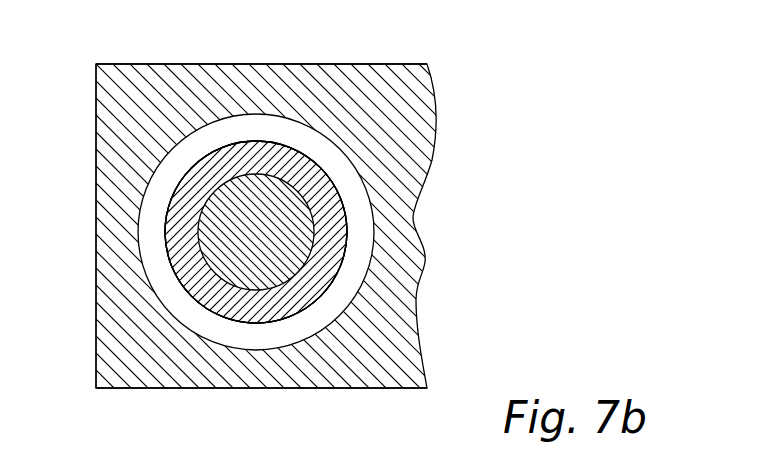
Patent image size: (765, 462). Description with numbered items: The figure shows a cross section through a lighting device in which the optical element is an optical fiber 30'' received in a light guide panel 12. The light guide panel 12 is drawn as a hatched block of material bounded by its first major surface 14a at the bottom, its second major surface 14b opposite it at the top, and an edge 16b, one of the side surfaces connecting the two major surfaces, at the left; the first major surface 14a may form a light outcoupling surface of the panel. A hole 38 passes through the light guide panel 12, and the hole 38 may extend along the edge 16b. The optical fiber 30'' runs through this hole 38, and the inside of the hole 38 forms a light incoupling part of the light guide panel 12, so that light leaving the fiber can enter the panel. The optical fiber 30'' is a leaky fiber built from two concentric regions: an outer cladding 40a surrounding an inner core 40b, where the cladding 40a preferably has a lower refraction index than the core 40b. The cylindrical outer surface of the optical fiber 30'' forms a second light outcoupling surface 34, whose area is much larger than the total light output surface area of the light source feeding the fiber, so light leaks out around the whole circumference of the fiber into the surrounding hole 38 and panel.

The light guide panel 12 is at (392, 364).
The first major surface 14a is at (123, 388).
The second major surface 14b is at (164, 64).
The edge 16b is at (96, 212).
The optical fiber 30'' is at (334, 216).
The second light outcoupling surface 34 is at (343, 250).
The hole 38 is at (292, 130).
The cladding 40a is at (293, 303).
The core 40b is at (230, 270).